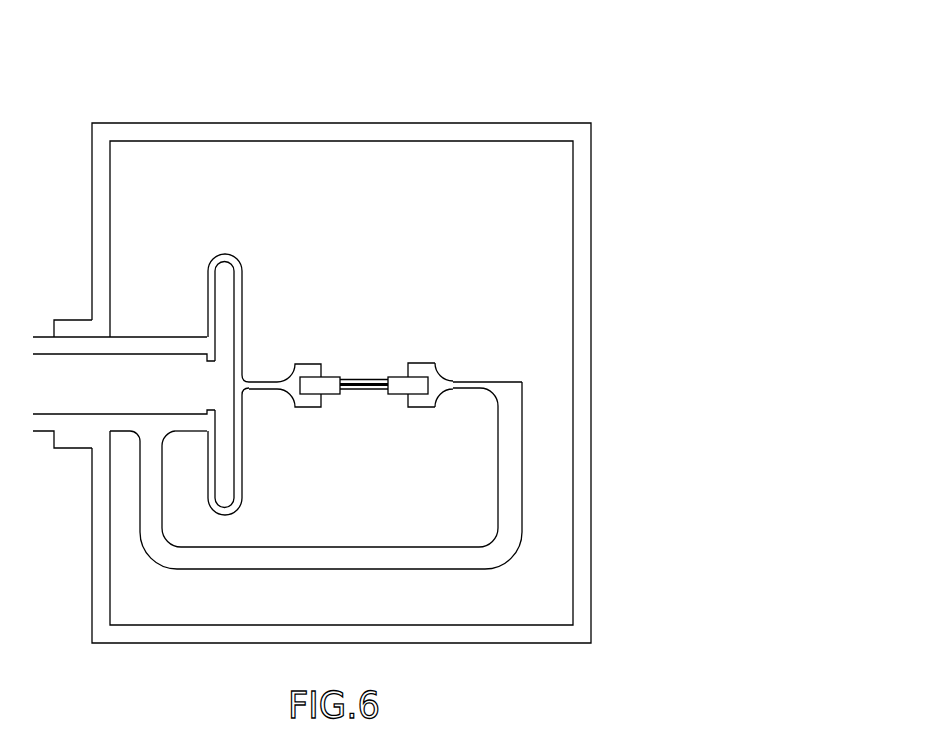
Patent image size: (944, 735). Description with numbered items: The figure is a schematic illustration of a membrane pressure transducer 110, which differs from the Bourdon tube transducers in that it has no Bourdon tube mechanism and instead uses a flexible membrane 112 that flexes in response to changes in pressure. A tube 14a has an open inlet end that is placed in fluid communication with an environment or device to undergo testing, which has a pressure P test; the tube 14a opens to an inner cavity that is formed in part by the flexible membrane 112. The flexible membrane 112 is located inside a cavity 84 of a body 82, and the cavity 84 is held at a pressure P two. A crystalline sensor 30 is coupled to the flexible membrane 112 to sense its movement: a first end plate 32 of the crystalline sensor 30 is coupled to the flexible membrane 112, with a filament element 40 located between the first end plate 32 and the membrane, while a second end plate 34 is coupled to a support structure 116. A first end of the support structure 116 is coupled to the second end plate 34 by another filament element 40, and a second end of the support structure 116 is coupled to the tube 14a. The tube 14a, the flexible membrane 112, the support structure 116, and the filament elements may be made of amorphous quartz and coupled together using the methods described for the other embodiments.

The membrane pressure transducer 110 is at (557, 91).
The body 82 is at (592, 262).
The cavity 84 is at (498, 233).
The tube 14a is at (158, 337).
The flexible membrane 112 is at (243, 288).
The filament element 40 is at (265, 372).
The crystalline sensor 30 is at (365, 372).
The first end plate 32 is at (333, 395).
The second end plate 34 is at (395, 395).
The support structure 116 is at (343, 547).